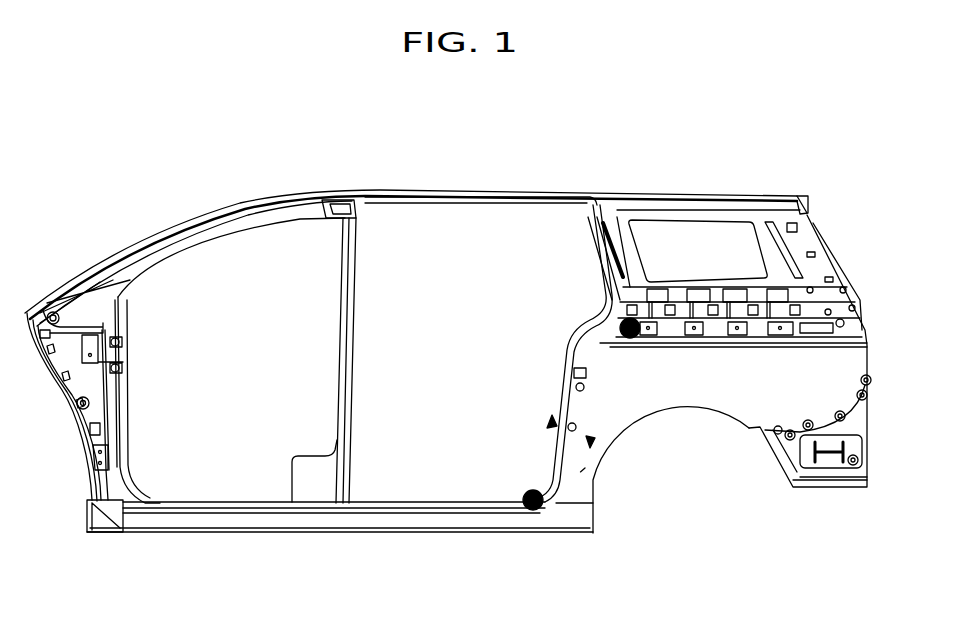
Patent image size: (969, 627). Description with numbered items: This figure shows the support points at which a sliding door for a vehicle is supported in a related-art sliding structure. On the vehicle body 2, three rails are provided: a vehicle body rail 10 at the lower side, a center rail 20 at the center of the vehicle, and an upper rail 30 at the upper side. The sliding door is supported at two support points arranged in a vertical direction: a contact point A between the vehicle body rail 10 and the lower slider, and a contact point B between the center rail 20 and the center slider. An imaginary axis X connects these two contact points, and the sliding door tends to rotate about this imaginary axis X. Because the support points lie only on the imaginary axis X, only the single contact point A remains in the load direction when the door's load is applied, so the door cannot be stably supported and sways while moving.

The vehicle body 2 is at (175, 520).
The vehicle body rail 10 is at (421, 505).
The center rail 20 is at (717, 323).
The upper rail 30 is at (433, 188).
The contact point A is at (533, 510).
The contact point B is at (622, 320).
The imaginary axis X is at (587, 468).